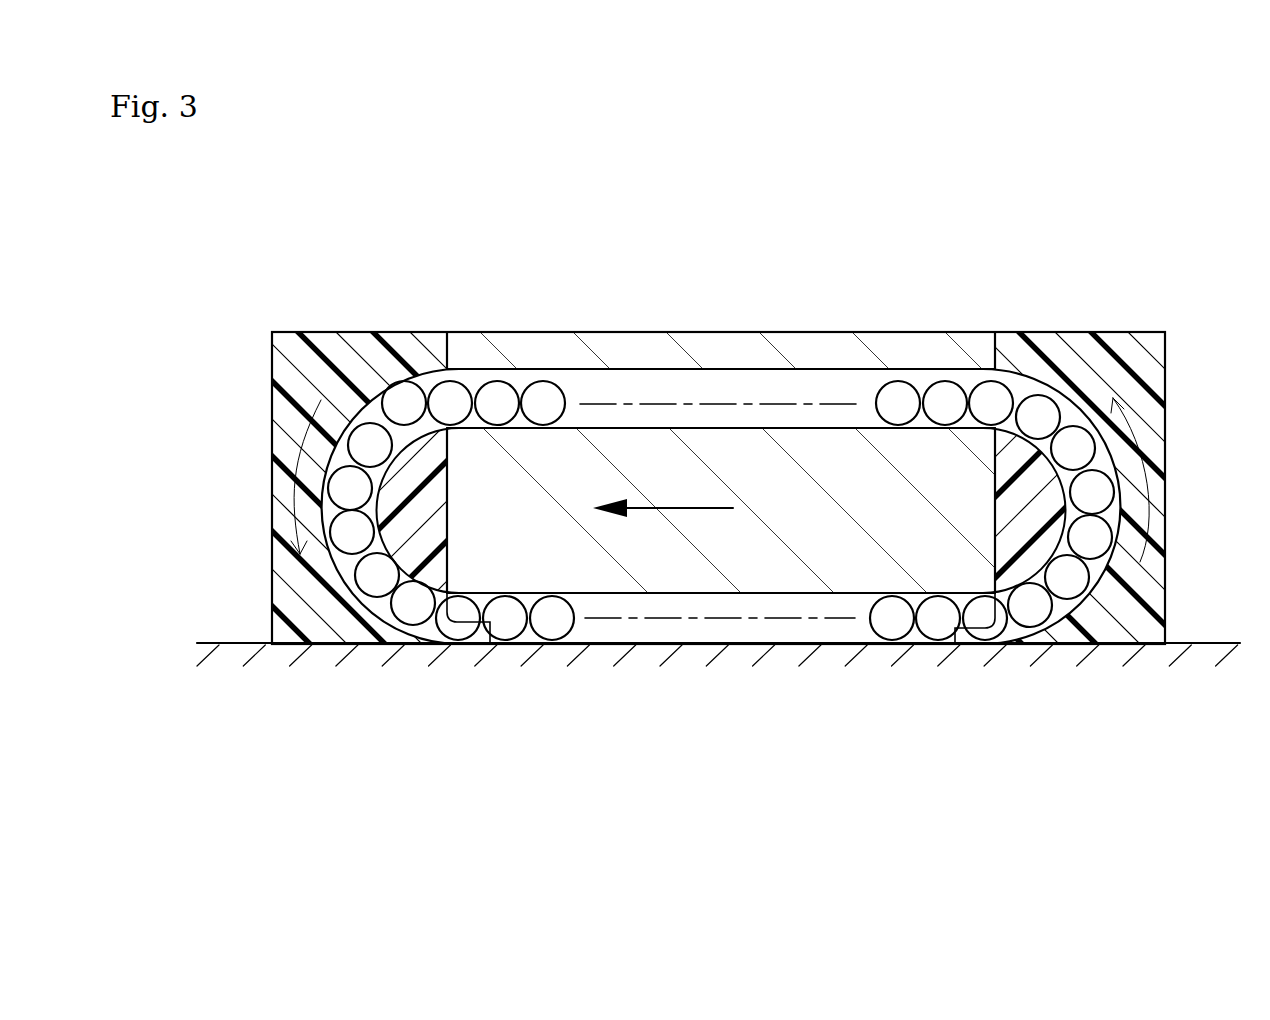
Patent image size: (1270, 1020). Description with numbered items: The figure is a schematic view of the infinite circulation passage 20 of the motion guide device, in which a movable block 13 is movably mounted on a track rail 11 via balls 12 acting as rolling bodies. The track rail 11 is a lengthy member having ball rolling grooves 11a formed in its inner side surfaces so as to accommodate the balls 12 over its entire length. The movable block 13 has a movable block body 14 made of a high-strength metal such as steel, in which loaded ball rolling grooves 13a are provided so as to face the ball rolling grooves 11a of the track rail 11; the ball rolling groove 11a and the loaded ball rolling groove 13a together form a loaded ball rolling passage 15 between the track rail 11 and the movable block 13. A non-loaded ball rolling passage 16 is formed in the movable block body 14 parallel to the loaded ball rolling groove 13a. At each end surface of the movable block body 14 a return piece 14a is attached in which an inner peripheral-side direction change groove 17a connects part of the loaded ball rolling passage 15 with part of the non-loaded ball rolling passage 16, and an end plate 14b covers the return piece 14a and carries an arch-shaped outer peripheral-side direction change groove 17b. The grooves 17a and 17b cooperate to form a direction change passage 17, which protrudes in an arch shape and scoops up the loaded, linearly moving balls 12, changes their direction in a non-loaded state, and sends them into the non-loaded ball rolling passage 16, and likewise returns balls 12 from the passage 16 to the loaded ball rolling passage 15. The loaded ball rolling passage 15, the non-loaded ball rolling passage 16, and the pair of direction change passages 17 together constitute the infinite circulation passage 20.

The track rail 11 is at (458, 678).
The ball rolling groove 11a is at (703, 637).
The ball 12 is at (886, 630).
The movable block 13 is at (822, 268).
The loaded ball rolling groove 13a is at (627, 592).
The movable block body 14 is at (732, 345).
The return piece 14a is at (300, 538).
The end plate 14b is at (362, 347).
The loaded ball rolling passage 15 is at (545, 637).
The non-loaded ball rolling passage 16 is at (660, 381).
The direction change passage 17 is at (330, 400).
The inner peripheral-side direction change groove 17a is at (325, 456).
The outer peripheral-side direction change groove 17b is at (331, 515).
The infinite circulation passage 20 is at (927, 363).